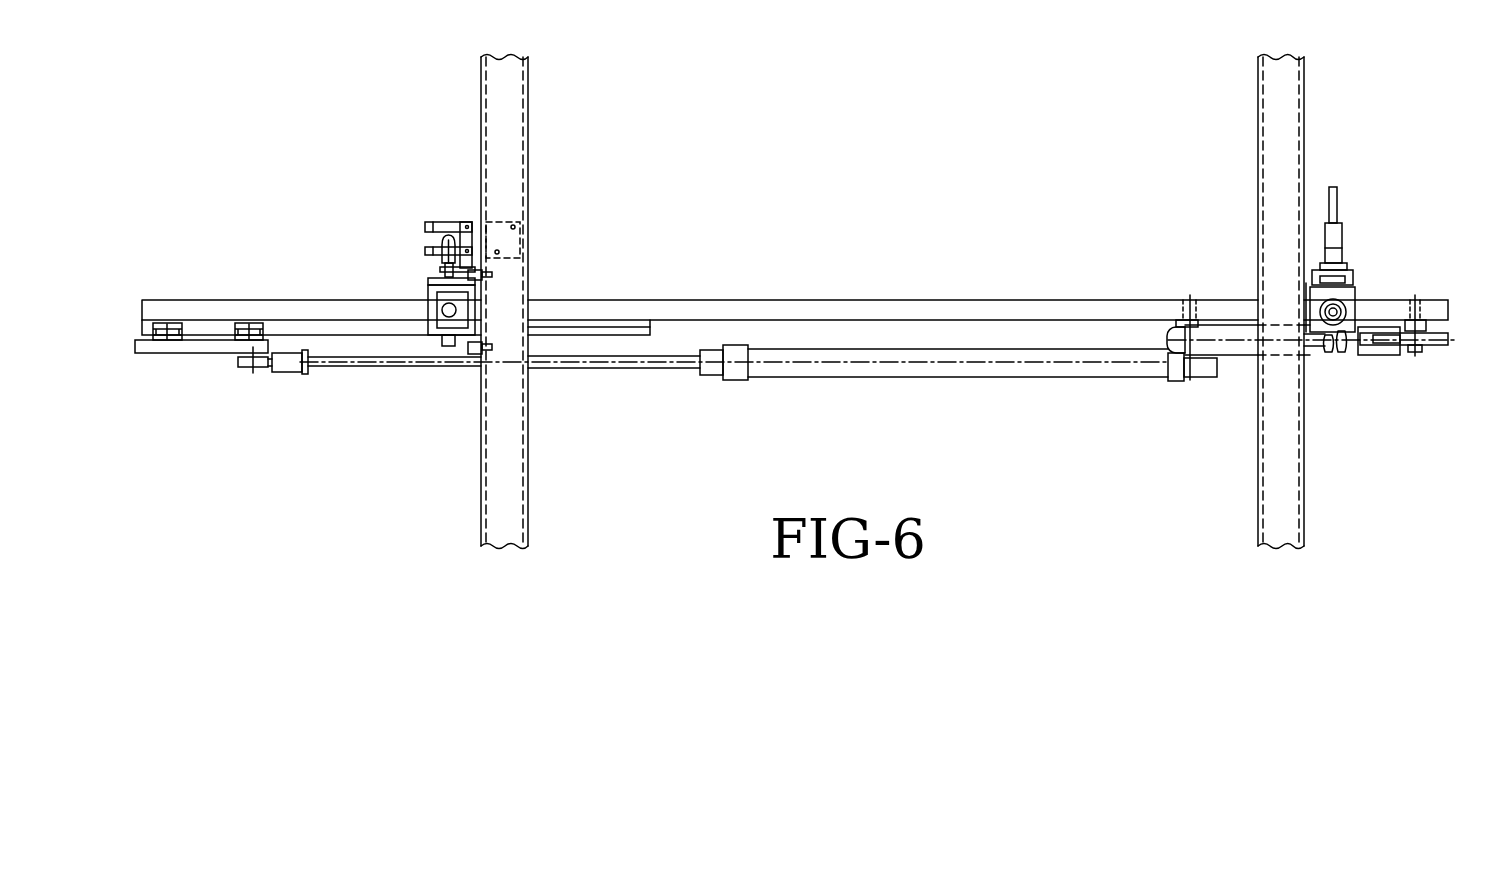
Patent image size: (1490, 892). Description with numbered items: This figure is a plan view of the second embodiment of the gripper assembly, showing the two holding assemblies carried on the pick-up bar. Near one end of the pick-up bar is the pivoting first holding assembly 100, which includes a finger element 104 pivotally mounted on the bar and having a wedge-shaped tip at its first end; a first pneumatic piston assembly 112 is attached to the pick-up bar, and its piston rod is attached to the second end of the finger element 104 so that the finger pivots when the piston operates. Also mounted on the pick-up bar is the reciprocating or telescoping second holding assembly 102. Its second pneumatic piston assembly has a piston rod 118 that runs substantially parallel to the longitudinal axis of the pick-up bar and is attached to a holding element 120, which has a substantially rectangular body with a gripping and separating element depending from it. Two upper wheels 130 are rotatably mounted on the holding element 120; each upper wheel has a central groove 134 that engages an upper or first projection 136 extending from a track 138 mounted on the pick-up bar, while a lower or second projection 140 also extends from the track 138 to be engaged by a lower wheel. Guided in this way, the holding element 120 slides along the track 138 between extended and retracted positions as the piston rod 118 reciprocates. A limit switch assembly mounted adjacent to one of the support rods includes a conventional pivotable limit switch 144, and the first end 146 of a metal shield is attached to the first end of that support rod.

The first holding assembly 100 is at (1355, 364).
The second holding assembly 102 is at (732, 385).
The finger element 104 is at (1438, 346).
The first pneumatic piston assembly 112 is at (1240, 372).
The piston rod 118 is at (397, 364).
The holding element 120 is at (212, 354).
The upper wheels 130 is at (170, 323).
The central groove 134 is at (166, 340).
The first projection 136 is at (360, 336).
The track 138 is at (600, 333).
The second projection 140 is at (426, 239).
The limit switch 144 is at (449, 240).
The first end of metal shield 146 is at (442, 272).